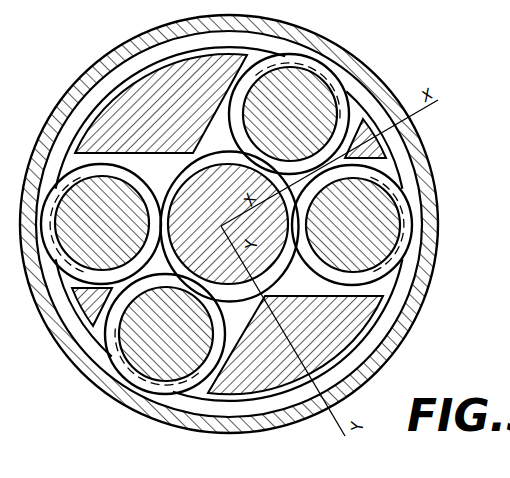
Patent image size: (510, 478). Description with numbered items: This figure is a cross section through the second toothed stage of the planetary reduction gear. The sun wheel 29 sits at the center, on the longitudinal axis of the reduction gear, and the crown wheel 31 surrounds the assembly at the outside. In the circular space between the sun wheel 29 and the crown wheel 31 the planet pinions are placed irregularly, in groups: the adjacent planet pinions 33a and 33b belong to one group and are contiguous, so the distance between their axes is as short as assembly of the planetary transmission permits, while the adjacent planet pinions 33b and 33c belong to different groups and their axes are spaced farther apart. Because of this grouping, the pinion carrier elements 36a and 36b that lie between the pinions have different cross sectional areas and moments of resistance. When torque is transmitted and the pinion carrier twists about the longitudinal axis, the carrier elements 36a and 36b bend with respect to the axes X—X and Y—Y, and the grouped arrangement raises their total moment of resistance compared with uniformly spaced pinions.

The crown wheel 31 is at (71, 90).
The sun wheel 29 is at (190, 200).
The planet pinion 33a is at (320, 102).
The planet pinion 33b is at (383, 232).
The planet pinion 33c is at (150, 360).
The pinion carrier element 36a is at (382, 148).
The pinion carrier element 36b is at (355, 325).